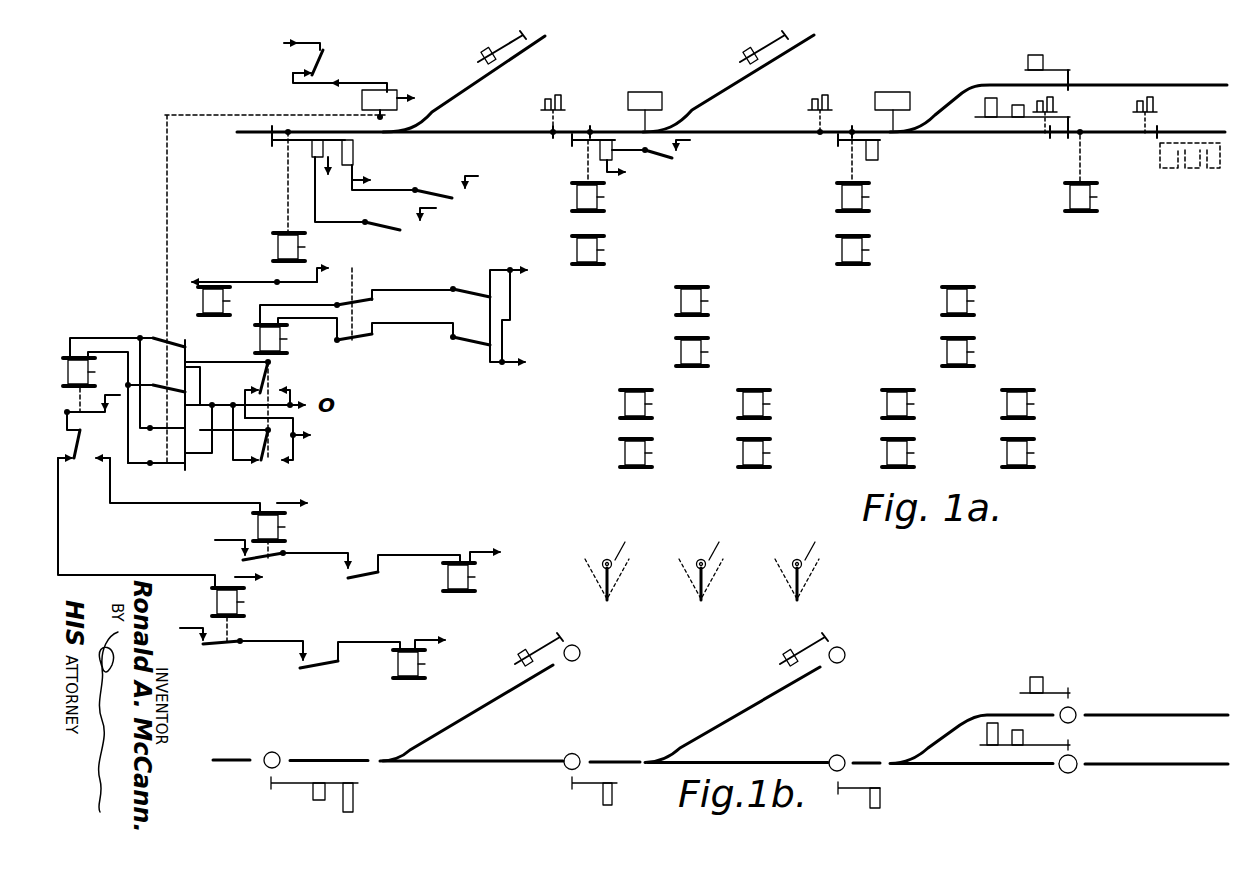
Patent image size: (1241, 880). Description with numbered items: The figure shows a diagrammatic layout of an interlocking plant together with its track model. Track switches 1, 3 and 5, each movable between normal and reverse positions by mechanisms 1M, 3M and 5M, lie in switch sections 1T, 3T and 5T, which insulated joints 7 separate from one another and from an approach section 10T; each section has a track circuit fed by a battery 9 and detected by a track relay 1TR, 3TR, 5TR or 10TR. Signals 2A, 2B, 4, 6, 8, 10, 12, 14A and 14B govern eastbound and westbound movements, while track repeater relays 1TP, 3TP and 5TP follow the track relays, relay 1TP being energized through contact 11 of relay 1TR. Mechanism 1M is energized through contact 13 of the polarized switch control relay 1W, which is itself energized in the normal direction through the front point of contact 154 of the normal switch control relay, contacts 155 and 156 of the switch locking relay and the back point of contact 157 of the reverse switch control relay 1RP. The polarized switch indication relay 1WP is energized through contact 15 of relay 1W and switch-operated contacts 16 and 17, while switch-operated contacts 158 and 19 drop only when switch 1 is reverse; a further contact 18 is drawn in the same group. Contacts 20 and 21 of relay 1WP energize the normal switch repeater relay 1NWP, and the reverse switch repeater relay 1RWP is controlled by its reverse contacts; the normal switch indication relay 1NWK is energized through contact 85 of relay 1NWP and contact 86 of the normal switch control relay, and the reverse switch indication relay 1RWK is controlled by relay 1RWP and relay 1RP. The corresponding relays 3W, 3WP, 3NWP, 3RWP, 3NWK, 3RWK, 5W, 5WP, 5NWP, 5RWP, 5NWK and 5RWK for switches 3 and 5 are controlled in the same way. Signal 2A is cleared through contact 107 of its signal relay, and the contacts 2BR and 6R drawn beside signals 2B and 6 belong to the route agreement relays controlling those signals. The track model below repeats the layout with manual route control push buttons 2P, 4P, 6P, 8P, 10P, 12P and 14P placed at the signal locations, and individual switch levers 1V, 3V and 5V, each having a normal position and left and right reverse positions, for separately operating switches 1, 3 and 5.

In FIG. 1A, the track switch 1 is at (380, 117).
In FIG. 1B, the track switch 1 is at (464, 713).
In FIG. 1A, the track switch 3 is at (645, 124).
In FIG. 1B, the track switch 3 is at (732, 715).
In FIG. 1A, the track switch 5 is at (892, 124).
In FIG. 1B, the track switch 5 is at (1058, 739).
In FIG. 1A, the signal 4 is at (476, 48).
In FIG. 1B, the signal 4 is at (539, 638).
In FIG. 1A, the signal 8 is at (738, 50).
In FIG. 1B, the signal 8 is at (778, 654).
In FIG. 1A, the battery 9 is at (860, 101).
In FIG. 1A, the insulated joints 7 is at (715, 111).
In FIG. 1A, the signal 10 is at (876, 153).
In FIG. 1B, the signal 10 is at (878, 798).
In FIG. 1A, the signal 12 is at (1049, 53).
In FIG. 1B, the signal 12 is at (1045, 673).
In FIG. 1A, the signal 6 is at (611, 162).
In FIG. 1B, the signal 6 is at (592, 797).
In FIG. 1A, the signal 6R contact 6R is at (661, 164).
In FIG. 1A, the through-route signal 2A is at (378, 165).
In FIG. 1B, the through-route signal 2A is at (367, 800).
In FIG. 1A, the signal 2B is at (312, 150).
In FIG. 1B, the signal 2B is at (311, 797).
In FIG. 1A, the signal 2BR contact 2BR is at (394, 215).
In FIG. 1A, the signal 14A is at (988, 98).
In FIG. 1B, the signal 14A is at (990, 723).
In FIG. 1A, the signal 14B is at (1015, 117).
In FIG. 1B, the signal 14B is at (1017, 745).
In FIG. 1A, the switch section 1T is at (413, 119).
In FIG. 1A, the switch section 3T is at (721, 121).
In FIG. 1A, the switch section 5T is at (966, 123).
In FIG. 1A, the approach section 10T is at (1152, 123).
In FIG. 1A, the switch operating mechanism 1M is at (399, 92).
In FIG. 1A, the switch operating mechanism 3M is at (644, 99).
In FIG. 1A, the switch operating mechanism 5M is at (893, 99).
In FIG. 1A, the contact of relay 1W 13 is at (341, 60).
In FIG. 1A, the contact of signal relay 2AH 107 is at (463, 169).
In FIG. 1A, the track relay 1TR is at (260, 245).
In FIG. 1A, the track relay 3TR is at (618, 179).
In FIG. 1A, the track relay 5TR is at (883, 179).
In FIG. 1A, the track relay 10TR is at (1119, 177).
In FIG. 1A, the track repeater relay 1TP is at (263, 279).
In FIG. 1A, the track repeater relay 3TP is at (617, 252).
In FIG. 1A, the track repeater relay 5TP is at (882, 252).
In FIG. 1A, the contact of relay 1TR 11 is at (306, 304).
In FIG. 1A, the contact of relay 1W 15 is at (258, 408).
In FIG. 1A, the switch-operated contact 16 is at (140, 394).
In FIG. 1A, the switch-operated contact 17 is at (136, 407).
In FIG. 1A, the contact 18 is at (259, 449).
In FIG. 1A, the switch-operated contact 19 is at (156, 477).
In FIG. 1A, the contact of relay 1WP 20 is at (92, 413).
In FIG. 1A, the contact of relay 1WP 21 is at (159, 523).
In FIG. 1A, the switch-operated contact 158 is at (157, 398).
In FIG. 1A, the contact of relay 1NP 154 is at (485, 310).
In FIG. 1A, the contact of relay 1LS 155 is at (389, 286).
In FIG. 1A, the contact of relay 1LS 156 is at (351, 344).
In FIG. 1A, the contact of relay 1RP 157 is at (444, 321).
In FIG. 1A, the contact of relay 1NWP 85 is at (233, 643).
In FIG. 1A, the contact of relay 1NP 86 is at (346, 640).
In FIG. 1A, the polarized switch control relay 1W is at (247, 341).
In FIG. 1A, the polarized switch indication relay 1WP is at (85, 356).
In FIG. 1A, the switch relay 3W is at (718, 303).
In FIG. 1A, the switch repeater relay 3WP is at (726, 354).
In FIG. 1A, the switch relay 5W is at (984, 303).
In FIG. 1A, the switch repeater relay 5WP is at (992, 354).
In FIG. 1A, the reverse switch repeater relay 1RWP is at (283, 529).
In FIG. 1A, the reverse switch indication relay 1RWK is at (504, 567).
In FIG. 1A, the normal switch repeater relay 1NWP is at (272, 604).
In FIG. 1A, the normal switch indication relay 1NWK is at (418, 667).
In FIG. 1A, the reverse switch control relay 1RP is at (404, 551).
In FIG. 1A, the relay 3RWP is at (679, 407).
In FIG. 1A, the relay 3RWK is at (798, 407).
In FIG. 1A, the relay 3NWP is at (679, 456).
In FIG. 1A, the normal switch indication relay 3NWK is at (799, 456).
In FIG. 1A, the relay 5RWP is at (941, 407).
In FIG. 1A, the relay 5RWK is at (1062, 407).
In FIG. 1A, the relay 5NWP is at (941, 456).
In FIG. 1A, the normal switch indication relay 5NWK is at (1063, 456).
In FIG. 1A, the switch lever 1V is at (617, 556).
In FIG. 1A, the switch lever 3V is at (710, 556).
In FIG. 1A, the switch lever 5V is at (807, 556).
In FIG. 1B, the manual route control push button 2P is at (272, 744).
In FIG. 1B, the manual route control push button 4P is at (580, 653).
In FIG. 1B, the manual route control push button 6P is at (572, 745).
In FIG. 1B, the manual route control push button 8P is at (845, 655).
In FIG. 1B, the manual route control push button 10P is at (841, 748).
In FIG. 1B, the manual route control push button 12P is at (1094, 703).
In FIG. 1B, the manual route control push button 14P is at (1075, 771).